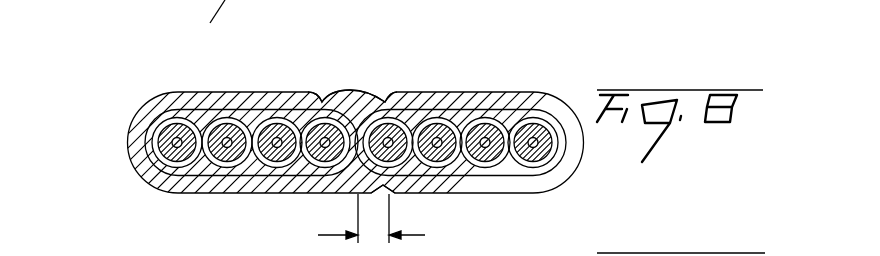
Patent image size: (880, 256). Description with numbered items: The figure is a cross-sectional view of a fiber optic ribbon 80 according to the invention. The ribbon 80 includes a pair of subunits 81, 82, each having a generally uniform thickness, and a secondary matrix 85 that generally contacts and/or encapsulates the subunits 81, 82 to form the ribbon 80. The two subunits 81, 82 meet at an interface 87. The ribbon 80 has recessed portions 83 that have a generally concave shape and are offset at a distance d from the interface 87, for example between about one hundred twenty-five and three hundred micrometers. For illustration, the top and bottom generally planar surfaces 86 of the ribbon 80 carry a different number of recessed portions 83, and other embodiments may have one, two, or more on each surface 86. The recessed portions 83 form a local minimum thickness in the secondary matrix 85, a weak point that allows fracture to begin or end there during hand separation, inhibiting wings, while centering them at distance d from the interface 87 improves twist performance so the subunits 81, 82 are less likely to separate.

The ribbon 80 is at (112, 122).
The subunit 81 is at (228, 135).
The subunit 82 is at (513, 130).
The recessed portion 83 is at (386, 100).
The secondary matrix 85 is at (553, 100).
The generally planar surface 86 is at (523, 91).
The interface 87 is at (332, 192).